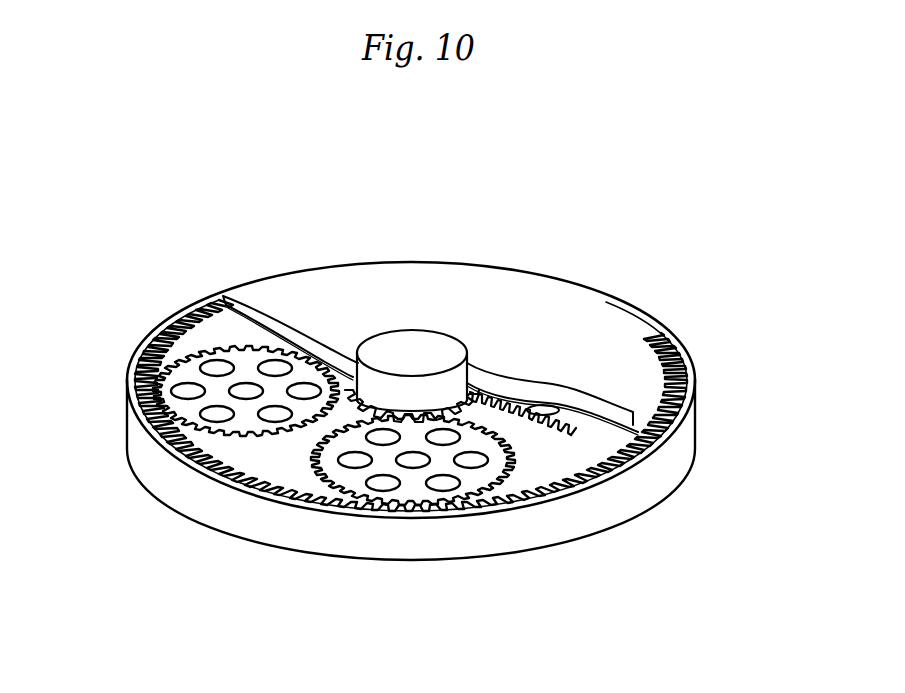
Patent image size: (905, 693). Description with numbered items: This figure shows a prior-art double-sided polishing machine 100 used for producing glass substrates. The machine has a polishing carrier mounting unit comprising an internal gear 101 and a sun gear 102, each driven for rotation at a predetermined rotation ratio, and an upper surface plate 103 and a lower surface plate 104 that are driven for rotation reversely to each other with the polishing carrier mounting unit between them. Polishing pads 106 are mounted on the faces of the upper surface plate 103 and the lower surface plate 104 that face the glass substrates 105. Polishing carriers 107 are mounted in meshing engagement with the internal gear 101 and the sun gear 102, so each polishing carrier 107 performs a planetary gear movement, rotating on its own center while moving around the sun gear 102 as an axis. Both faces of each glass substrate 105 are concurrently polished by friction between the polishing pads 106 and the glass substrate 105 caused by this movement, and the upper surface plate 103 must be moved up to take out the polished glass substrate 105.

The double-sided polishing machine 100 is at (692, 351).
The internal gear 101 is at (197, 318).
The sun gear 102 is at (350, 372).
The upper surface plate 103 is at (575, 306).
The lower surface plate 104 is at (500, 537).
The glass substrate 105 is at (303, 387).
The polishing pad 106 is at (613, 420).
The polishing carrier 107 is at (307, 450).